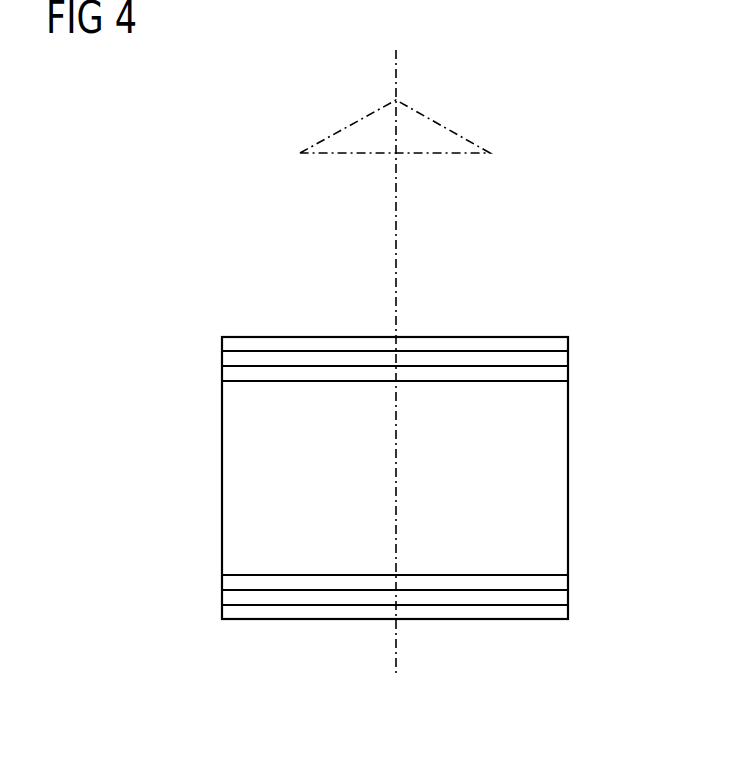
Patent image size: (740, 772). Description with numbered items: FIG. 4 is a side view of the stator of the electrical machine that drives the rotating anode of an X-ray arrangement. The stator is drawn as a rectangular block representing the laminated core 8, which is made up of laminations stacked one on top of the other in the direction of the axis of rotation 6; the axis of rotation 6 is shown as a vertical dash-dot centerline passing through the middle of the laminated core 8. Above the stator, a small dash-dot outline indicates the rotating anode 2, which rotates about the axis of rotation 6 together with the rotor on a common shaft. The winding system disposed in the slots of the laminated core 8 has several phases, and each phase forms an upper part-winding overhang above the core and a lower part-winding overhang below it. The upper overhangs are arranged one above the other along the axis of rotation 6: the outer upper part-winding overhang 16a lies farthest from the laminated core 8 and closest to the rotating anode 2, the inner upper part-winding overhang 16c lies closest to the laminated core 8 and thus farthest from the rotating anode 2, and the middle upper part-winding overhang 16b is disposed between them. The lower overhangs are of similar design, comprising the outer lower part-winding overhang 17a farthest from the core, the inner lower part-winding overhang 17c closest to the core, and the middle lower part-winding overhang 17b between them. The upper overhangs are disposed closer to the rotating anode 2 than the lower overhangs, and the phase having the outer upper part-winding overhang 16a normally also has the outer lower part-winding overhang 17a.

The rotating anode 2 is at (491, 151).
The axis of rotation 6 is at (398, 71).
The laminated core 8 is at (570, 468).
The outer upper part-winding overhang 16a is at (550, 343).
The middle upper part-winding overhang 16b is at (229, 357).
The inner upper part-winding overhang 16c is at (560, 375).
The outer lower part-winding overhang 17a is at (530, 612).
The middle lower part-winding overhang 17b is at (229, 596).
The inner lower part-winding overhang 17c is at (560, 583).